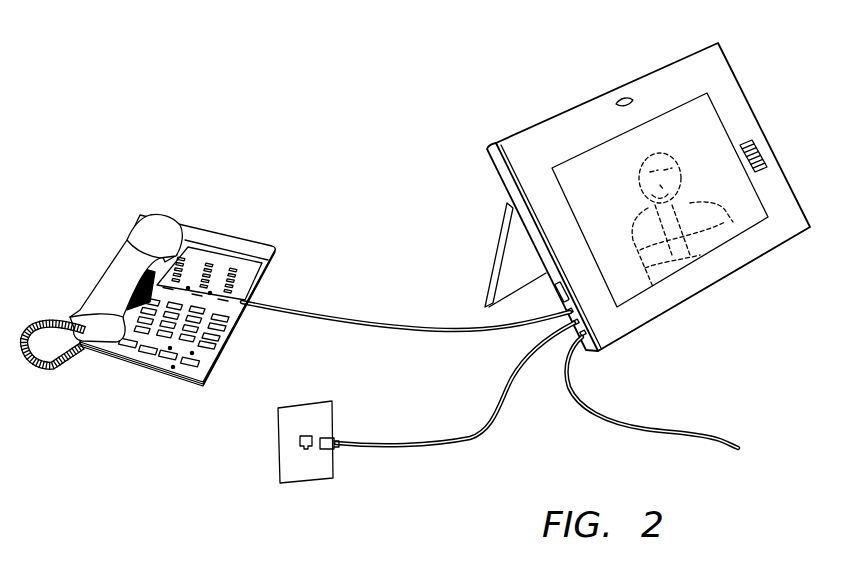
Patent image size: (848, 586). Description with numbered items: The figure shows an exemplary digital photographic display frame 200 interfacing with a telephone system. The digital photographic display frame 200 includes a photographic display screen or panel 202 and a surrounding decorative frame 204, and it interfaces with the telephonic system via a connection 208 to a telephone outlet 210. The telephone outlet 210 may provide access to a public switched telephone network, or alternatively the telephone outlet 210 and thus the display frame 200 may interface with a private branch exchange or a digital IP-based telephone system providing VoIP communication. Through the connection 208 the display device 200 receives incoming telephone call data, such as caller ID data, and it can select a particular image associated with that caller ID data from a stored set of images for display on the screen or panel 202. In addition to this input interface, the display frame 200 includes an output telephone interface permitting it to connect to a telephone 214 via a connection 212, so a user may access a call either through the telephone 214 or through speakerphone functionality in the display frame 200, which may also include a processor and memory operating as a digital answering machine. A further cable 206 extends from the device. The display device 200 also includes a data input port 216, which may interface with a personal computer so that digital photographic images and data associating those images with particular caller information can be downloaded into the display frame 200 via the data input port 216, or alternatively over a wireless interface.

The digital photographic display frame 200 is at (143, 92).
The photographic display screen or panel 202 is at (708, 138).
The surrounding decorative frame 204 is at (725, 102).
The power cable 206 is at (647, 433).
The connection 208 is at (490, 427).
The telephone outlet 210 is at (285, 418).
The connection 212 is at (393, 318).
The telephone 214 is at (242, 235).
The data input port 216 is at (557, 287).